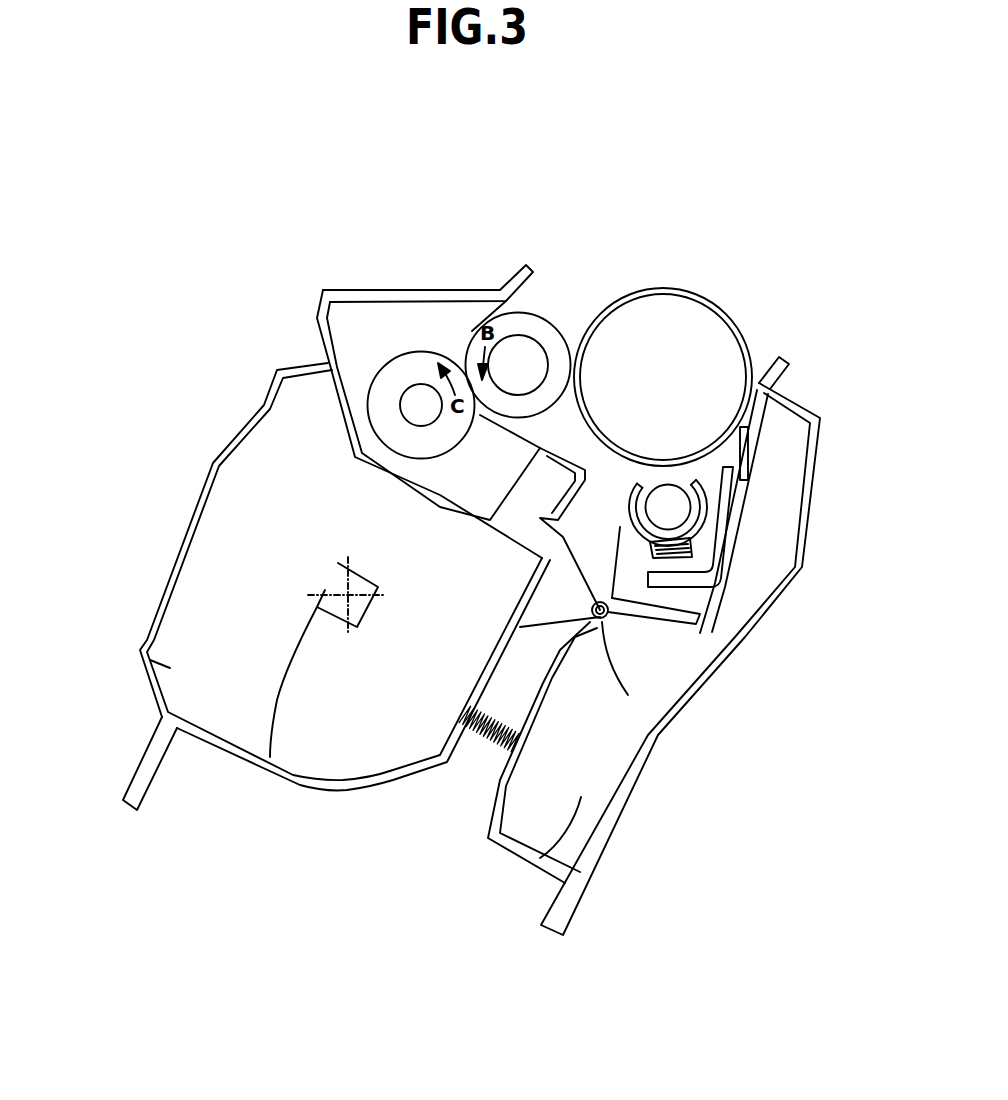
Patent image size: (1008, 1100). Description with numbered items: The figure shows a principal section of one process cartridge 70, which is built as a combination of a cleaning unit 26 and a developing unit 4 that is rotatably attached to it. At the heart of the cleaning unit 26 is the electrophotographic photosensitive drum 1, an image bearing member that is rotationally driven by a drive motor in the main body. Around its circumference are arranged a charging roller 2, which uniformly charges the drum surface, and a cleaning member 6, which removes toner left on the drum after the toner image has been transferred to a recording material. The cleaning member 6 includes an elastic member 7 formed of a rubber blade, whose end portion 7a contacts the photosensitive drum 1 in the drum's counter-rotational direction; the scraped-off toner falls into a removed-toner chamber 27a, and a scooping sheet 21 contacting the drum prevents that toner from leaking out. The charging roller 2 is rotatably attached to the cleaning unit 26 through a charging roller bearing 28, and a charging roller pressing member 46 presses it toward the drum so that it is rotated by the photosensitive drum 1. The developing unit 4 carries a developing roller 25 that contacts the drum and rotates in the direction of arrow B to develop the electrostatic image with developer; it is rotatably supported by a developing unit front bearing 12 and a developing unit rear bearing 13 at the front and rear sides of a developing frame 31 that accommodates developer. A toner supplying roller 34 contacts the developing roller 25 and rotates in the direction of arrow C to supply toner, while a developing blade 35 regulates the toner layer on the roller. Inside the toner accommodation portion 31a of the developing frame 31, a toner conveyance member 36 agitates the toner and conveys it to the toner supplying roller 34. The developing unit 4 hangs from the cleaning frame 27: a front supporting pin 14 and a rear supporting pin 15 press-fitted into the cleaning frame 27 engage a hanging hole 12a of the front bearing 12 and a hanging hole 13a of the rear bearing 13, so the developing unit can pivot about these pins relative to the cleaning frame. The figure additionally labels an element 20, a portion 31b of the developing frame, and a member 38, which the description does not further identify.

The process cartridge 70 is at (501, 183).
The electrophotographic photosensitive drum 1 is at (655, 317).
The charging roller 2 is at (672, 512).
The developing unit 4 is at (150, 581).
The cleaning member 6 is at (738, 503).
The elastic member 7 is at (737, 450).
The end portion 7a is at (747, 427).
The developing unit front bearing 12 is at (486, 713).
The hanging hole 12a is at (676, 734).
The developing unit rear bearing 13 is at (563, 598).
The hanging hole 13a is at (628, 695).
The front supporting pin 14 is at (604, 767).
The rear supporting pin 15 is at (597, 622).
The developer supply opening 20 is at (487, 293).
The scooping sheet 21 is at (780, 375).
The developing roller 25 is at (521, 337).
The cleaning unit 26 is at (802, 570).
The cleaning frame 27 is at (680, 712).
The removed-toner chamber 27a is at (540, 858).
The charging roller bearing 28 is at (710, 587).
The developing frame 31 is at (323, 334).
The toner accommodation portion 31a is at (197, 662).
The frame tab 31b is at (128, 812).
The toner supplying roller 34 is at (412, 378).
The developing blade 35 is at (541, 446).
The toner conveyance member 36 is at (271, 730).
The spring 38 is at (485, 745).
The charging roller pressing member 46 is at (693, 543).